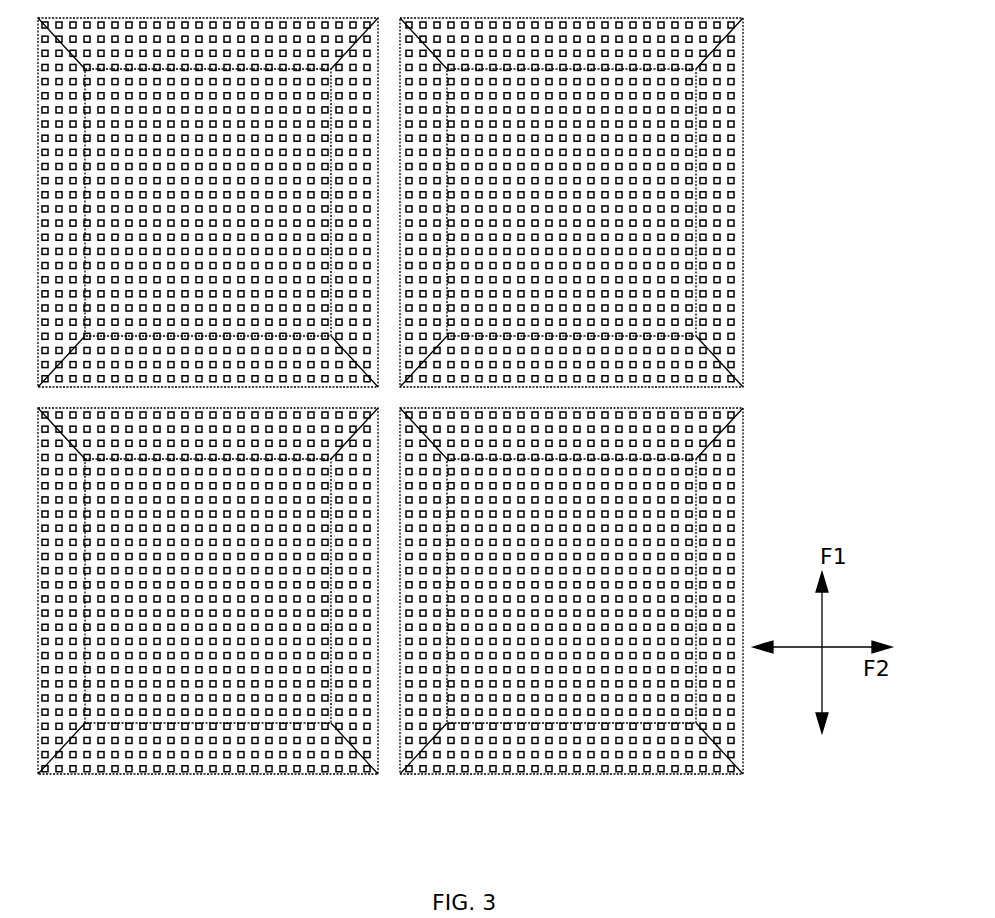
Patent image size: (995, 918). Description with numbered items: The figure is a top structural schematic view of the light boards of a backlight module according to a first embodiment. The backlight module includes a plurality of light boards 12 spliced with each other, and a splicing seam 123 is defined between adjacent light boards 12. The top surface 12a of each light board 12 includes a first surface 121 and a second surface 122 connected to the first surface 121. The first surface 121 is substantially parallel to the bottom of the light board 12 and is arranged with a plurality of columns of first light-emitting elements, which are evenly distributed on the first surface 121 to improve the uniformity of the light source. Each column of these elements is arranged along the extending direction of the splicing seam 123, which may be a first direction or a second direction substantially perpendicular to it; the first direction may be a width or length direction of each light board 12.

The light board 12 is at (464, 396).
The top surface 12a is at (645, 202).
The first surface 121 is at (640, 133).
The second surface 122 is at (703, 228).
The splicing seam 123 is at (672, 394).